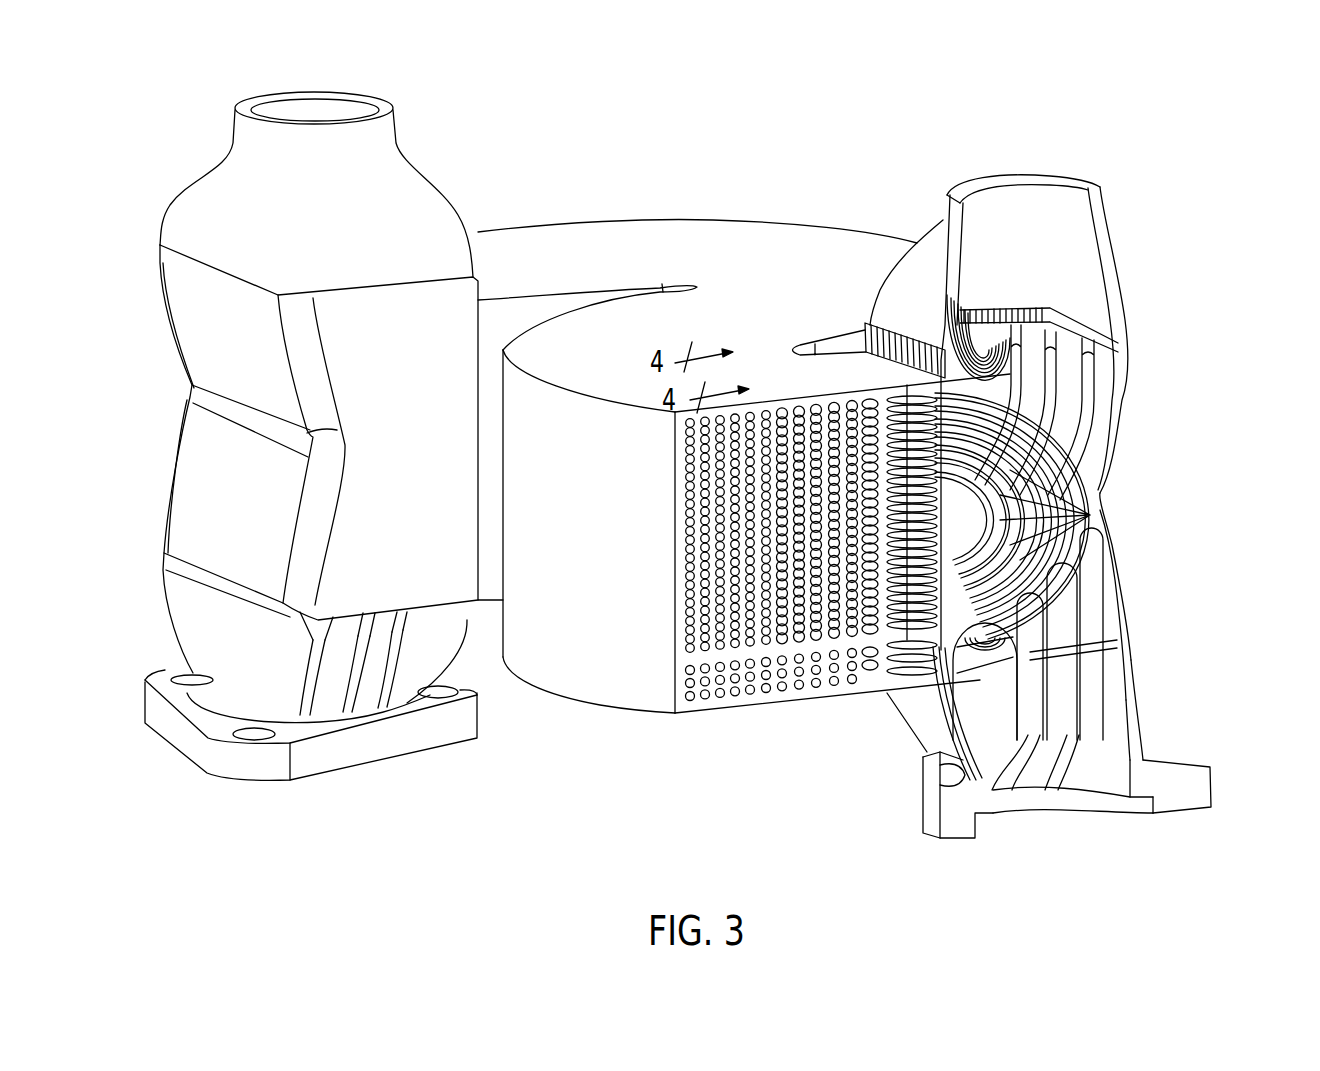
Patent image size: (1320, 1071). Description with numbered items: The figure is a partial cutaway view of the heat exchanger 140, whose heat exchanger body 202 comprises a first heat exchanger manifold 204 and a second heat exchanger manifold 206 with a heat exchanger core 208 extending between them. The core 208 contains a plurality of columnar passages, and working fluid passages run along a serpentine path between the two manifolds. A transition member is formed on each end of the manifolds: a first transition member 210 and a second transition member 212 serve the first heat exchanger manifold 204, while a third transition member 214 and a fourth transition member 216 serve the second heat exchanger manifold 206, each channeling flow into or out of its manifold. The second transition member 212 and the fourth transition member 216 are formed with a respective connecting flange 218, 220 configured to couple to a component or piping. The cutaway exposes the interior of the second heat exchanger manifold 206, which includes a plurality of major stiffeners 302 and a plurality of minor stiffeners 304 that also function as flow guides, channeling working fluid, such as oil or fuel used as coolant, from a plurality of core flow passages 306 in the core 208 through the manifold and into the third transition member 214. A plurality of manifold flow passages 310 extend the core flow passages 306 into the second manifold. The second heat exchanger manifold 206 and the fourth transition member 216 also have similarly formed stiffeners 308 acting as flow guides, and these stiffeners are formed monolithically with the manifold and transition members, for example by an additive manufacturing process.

The heat exchanger 140 is at (803, 85).
The heat exchanger body 202 is at (616, 178).
The first heat exchanger manifold 204 is at (438, 484).
The second heat exchanger manifold 206 is at (1100, 493).
The heat exchanger core 208 is at (777, 263).
The first transition member 210 is at (397, 178).
The second transition member 212 is at (432, 655).
The third transition member 214 is at (1108, 248).
The fourth transition member 216 is at (1140, 716).
The connecting flange 218 is at (393, 743).
The connecting flange 220 is at (1200, 810).
The major stiffeners 302 is at (1017, 330).
The minor stiffeners 304 is at (957, 387).
The core flow passages 306 is at (1113, 516).
The stiffeners 308 is at (1063, 775).
The manifold flow passages 310 is at (990, 320).